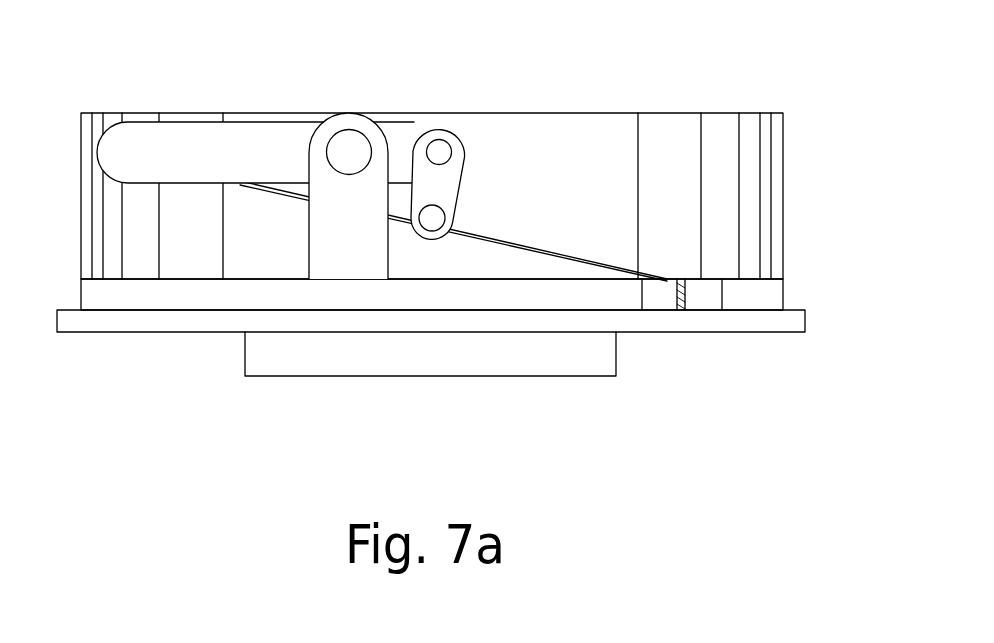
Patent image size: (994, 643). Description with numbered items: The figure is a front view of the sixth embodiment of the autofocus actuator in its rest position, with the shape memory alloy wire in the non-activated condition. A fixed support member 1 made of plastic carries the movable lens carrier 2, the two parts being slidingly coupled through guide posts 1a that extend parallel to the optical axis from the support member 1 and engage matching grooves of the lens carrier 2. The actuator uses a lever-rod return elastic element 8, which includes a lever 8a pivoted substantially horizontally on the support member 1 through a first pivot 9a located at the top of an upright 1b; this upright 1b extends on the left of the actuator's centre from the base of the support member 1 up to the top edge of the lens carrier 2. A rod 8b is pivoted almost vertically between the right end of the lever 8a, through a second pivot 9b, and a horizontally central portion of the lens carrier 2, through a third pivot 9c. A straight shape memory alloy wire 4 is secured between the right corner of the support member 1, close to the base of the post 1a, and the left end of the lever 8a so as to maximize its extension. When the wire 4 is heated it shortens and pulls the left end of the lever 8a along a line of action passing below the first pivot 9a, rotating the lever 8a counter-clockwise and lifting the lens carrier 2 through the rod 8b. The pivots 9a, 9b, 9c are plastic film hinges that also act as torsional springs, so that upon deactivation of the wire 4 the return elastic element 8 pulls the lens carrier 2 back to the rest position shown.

The fixed support member 1 is at (150, 320).
The guide post 1a is at (765, 200).
The upright 1b is at (345, 250).
The movable lens carrier 2 is at (600, 133).
The shape memory alloy wire 4 is at (610, 268).
The lever-rod return elastic element 8 is at (194, 96).
The lever 8a is at (226, 148).
The rod 8b is at (438, 188).
The first pivot 9a is at (347, 146).
The second pivot 9b is at (437, 150).
The third pivot 9c is at (432, 218).